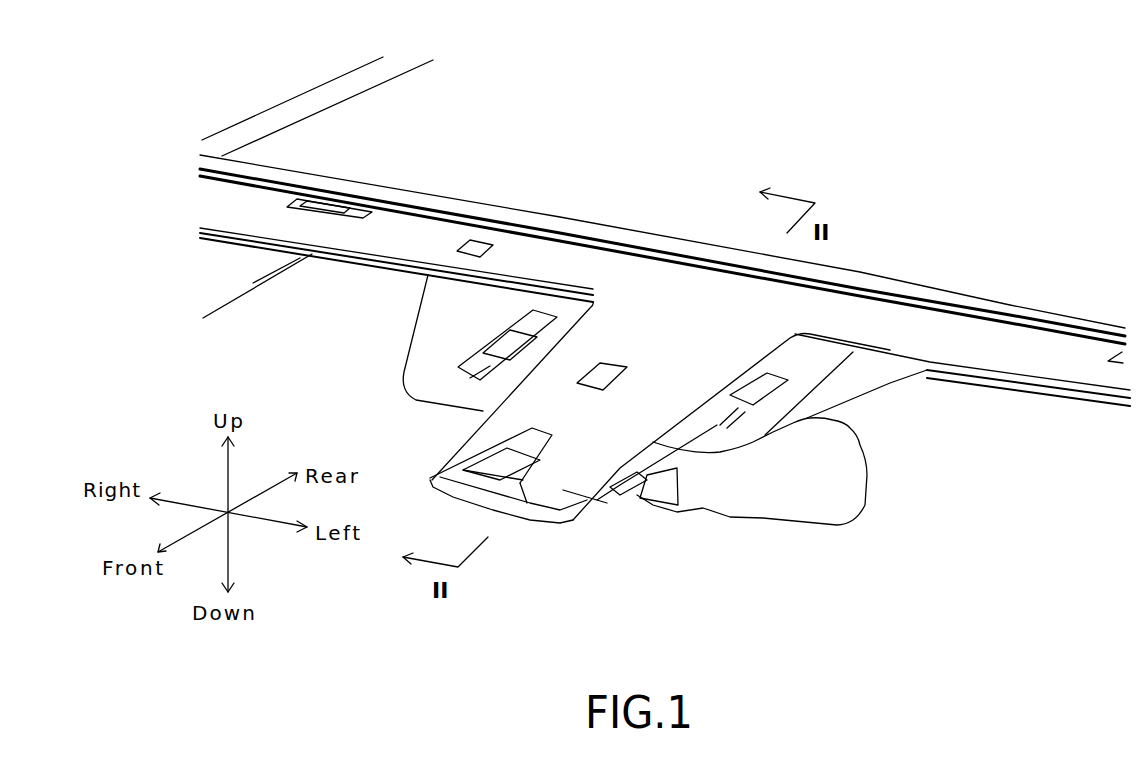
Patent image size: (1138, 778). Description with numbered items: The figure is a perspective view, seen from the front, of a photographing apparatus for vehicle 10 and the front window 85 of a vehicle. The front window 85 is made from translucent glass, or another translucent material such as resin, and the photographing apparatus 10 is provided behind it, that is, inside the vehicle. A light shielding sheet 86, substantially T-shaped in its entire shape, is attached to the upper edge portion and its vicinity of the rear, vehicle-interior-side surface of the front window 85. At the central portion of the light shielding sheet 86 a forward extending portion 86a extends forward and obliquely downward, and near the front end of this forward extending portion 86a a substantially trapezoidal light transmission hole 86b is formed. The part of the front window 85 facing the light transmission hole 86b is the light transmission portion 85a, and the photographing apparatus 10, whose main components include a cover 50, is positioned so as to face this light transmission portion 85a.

The photographing apparatus for vehicle 10 is at (623, 493).
The cover 50 is at (505, 520).
The front window 85 is at (1048, 420).
The light transmission portion 85a is at (460, 450).
The light shielding sheet 86 is at (1015, 340).
The forward extending portion 86a is at (560, 490).
The light transmission hole 86b is at (520, 497).